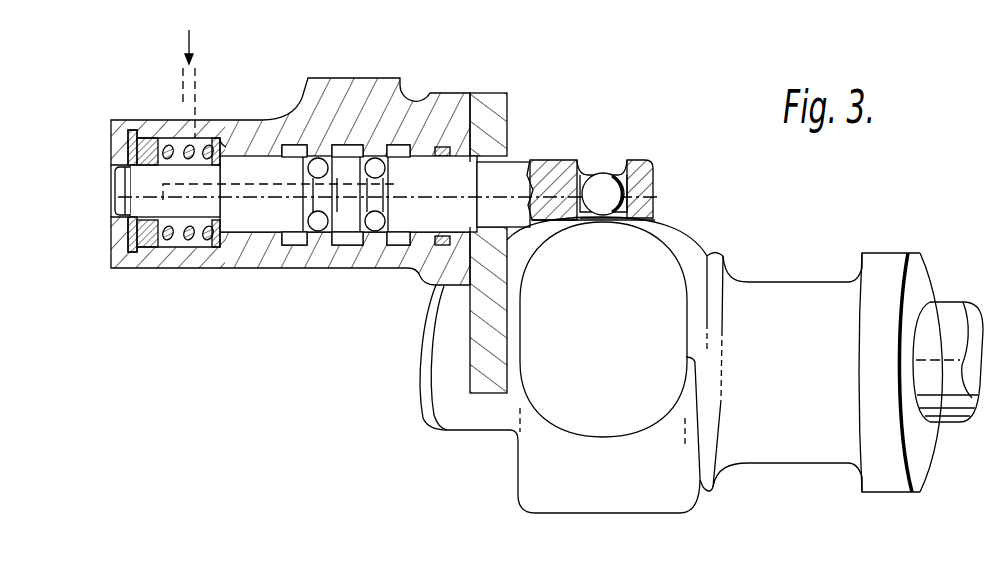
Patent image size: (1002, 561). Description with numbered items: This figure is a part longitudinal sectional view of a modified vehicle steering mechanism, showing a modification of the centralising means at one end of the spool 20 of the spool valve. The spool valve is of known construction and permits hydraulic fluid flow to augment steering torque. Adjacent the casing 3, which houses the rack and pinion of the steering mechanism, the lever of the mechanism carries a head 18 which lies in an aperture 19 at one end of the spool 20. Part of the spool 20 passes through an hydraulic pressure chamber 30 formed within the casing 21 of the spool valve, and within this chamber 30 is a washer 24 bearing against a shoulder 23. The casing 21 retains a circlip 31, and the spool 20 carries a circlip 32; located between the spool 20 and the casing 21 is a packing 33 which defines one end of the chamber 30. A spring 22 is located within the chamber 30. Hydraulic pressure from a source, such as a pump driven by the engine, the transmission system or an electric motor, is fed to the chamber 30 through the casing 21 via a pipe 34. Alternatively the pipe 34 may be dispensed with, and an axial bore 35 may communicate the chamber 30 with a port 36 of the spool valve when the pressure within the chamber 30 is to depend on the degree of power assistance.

The casing 3 is at (537, 465).
The head 18 is at (603, 188).
The aperture 19 is at (583, 173).
The spool 20 is at (427, 167).
The casing 21 is at (344, 82).
The spring 22 is at (175, 232).
The shoulder 23 is at (228, 248).
The washer 24 is at (223, 141).
The hydraulic pressure chamber 30 is at (192, 249).
The circlip 31 is at (130, 248).
The circlip 32 is at (126, 230).
The packing 33 is at (138, 144).
The pipe 34 is at (197, 104).
The axial bore 35 is at (250, 190).
The port 36 is at (345, 246).